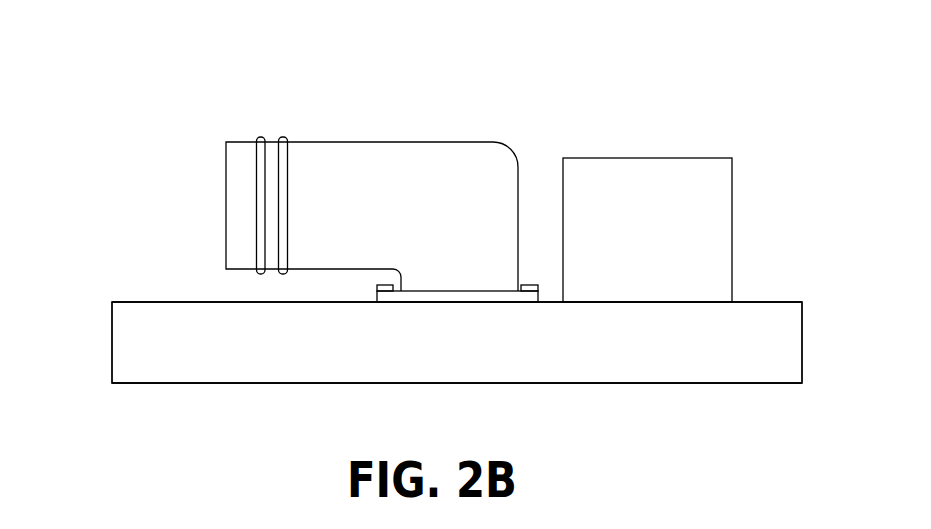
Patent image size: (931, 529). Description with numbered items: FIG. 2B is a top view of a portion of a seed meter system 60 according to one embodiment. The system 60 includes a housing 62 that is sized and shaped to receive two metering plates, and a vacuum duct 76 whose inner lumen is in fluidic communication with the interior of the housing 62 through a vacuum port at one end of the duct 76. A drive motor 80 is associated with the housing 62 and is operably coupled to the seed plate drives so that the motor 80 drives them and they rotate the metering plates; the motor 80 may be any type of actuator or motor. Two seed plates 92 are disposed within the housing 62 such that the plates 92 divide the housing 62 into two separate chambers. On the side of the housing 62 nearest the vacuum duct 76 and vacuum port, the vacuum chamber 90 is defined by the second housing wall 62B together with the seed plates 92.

The seed meter system 60 is at (146, 95).
The housing 62 is at (112, 357).
The second housing wall 62B is at (213, 302).
The vacuum duct 76 is at (329, 142).
The drive motor 80 is at (617, 158).
The vacuum chamber 90 is at (177, 357).
The seed plates 92 is at (626, 383).